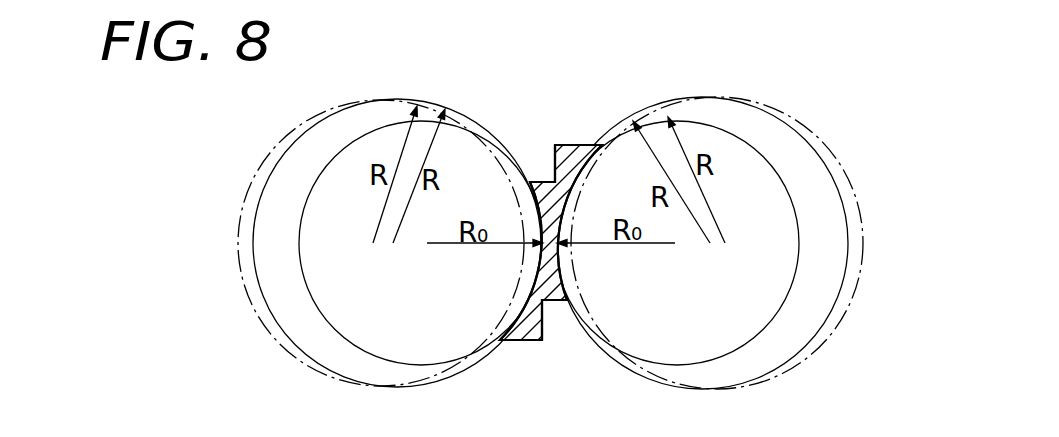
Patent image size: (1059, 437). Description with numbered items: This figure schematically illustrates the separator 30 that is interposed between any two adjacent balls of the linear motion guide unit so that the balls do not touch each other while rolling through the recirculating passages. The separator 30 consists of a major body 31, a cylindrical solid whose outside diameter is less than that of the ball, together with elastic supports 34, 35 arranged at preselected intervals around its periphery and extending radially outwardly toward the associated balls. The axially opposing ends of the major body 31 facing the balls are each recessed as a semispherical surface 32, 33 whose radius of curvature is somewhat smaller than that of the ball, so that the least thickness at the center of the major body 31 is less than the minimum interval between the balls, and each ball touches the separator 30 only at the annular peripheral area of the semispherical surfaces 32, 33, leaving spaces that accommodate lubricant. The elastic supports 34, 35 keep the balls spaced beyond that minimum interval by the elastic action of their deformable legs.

The separator 30 is at (563, 134).
The major body 31 is at (548, 160).
The semispherical surface 32 is at (538, 262).
The semispherical surface 33 is at (558, 258).
The elastic support 34 is at (528, 330).
The elastic support 35 is at (578, 143).